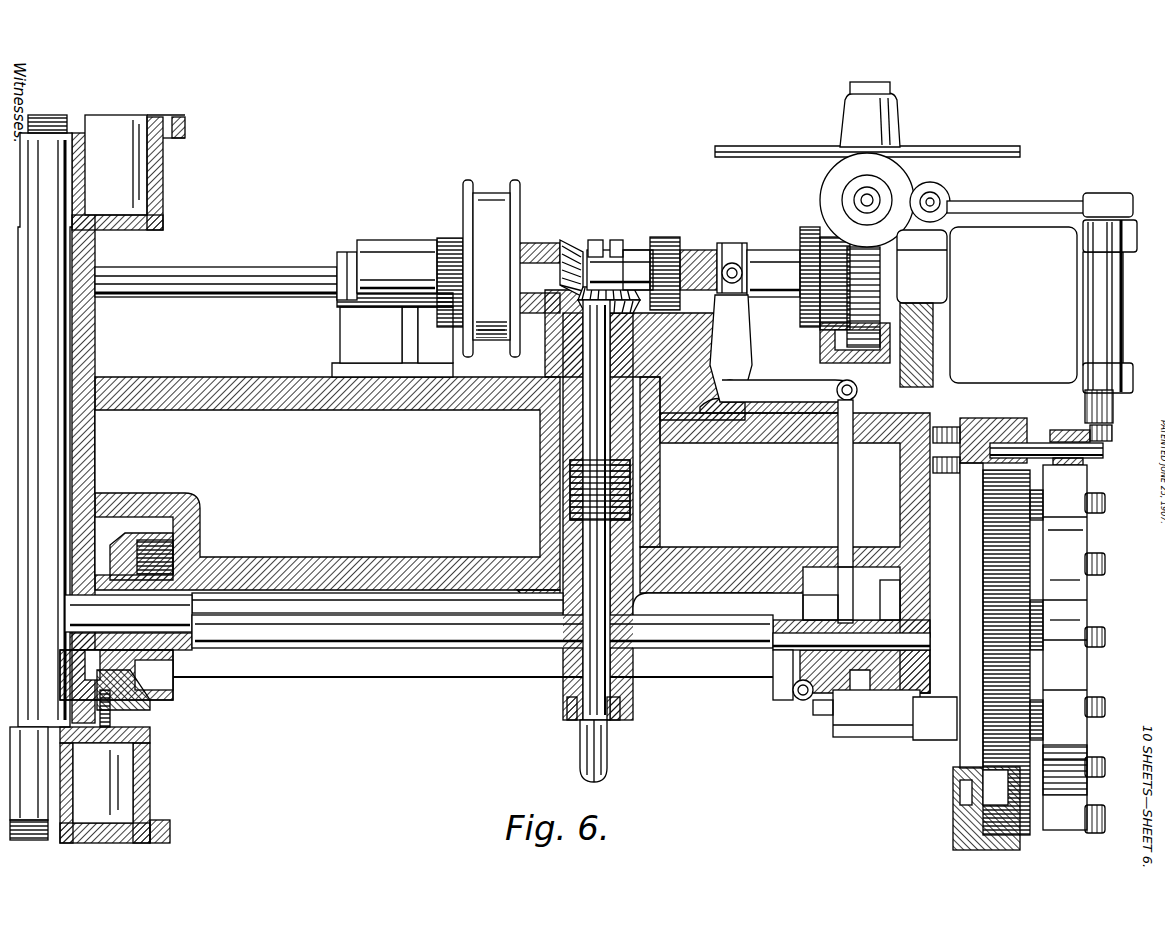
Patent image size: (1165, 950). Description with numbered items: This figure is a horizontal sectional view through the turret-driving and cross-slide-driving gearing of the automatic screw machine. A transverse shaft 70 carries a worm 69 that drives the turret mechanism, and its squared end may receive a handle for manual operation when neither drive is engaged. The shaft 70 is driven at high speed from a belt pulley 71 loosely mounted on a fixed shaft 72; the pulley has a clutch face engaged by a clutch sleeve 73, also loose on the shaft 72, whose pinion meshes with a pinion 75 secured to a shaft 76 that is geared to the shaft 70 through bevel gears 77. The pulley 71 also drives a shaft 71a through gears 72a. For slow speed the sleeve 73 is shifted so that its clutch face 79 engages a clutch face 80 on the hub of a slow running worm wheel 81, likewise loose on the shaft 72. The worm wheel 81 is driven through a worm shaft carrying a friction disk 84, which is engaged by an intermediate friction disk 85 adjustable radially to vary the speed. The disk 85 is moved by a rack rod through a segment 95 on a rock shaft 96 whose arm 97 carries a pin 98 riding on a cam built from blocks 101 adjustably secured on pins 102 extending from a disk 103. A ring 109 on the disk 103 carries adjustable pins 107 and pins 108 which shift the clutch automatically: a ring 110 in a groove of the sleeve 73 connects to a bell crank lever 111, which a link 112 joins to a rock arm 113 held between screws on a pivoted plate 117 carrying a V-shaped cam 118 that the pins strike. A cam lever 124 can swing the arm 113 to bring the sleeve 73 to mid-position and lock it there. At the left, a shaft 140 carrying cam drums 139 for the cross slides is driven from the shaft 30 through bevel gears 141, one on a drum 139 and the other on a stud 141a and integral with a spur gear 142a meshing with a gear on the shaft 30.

The shaft 30 is at (358, 638).
The worm 69 is at (632, 477).
The transverse shaft 70 is at (605, 540).
The pulley 71 is at (512, 213).
The shaft 71a is at (232, 270).
The fixed shaft 72 is at (358, 243).
The gears 72a is at (440, 340).
The clutch sleeve 73 is at (637, 250).
The pinion 75 is at (672, 237).
The shaft 76 is at (600, 250).
The bevel gears 77 is at (578, 240).
The clutch face 79 is at (806, 230).
The clutch face 80 is at (810, 322).
The worm wheel 81 is at (858, 352).
The friction disk 84 is at (973, 146).
The friction disk 85 is at (880, 185).
The segment 95 is at (965, 202).
The rock shaft 96 is at (1123, 315).
The arm 97 is at (1087, 392).
The pin 98 is at (1113, 434).
The blocks 101 is at (1087, 457).
The pins 102 is at (1098, 562).
The disk 103 is at (1032, 432).
The pins 107 is at (957, 428).
The pins 108 is at (940, 474).
The ring 109 is at (953, 845).
The ring 110 is at (737, 243).
The bell crank lever 111 is at (745, 340).
The link 112 is at (848, 494).
The rock arm 113 is at (812, 610).
The pivoted plate 117 is at (870, 715).
The V-shaped cam 118 is at (918, 720).
The cam lever 124 is at (800, 702).
The cam drums 139 is at (163, 180).
The shaft 140 is at (47, 347).
The bevel gears 141 is at (118, 525).
The stud 141a is at (180, 608).
The spur gear 142a is at (165, 692).